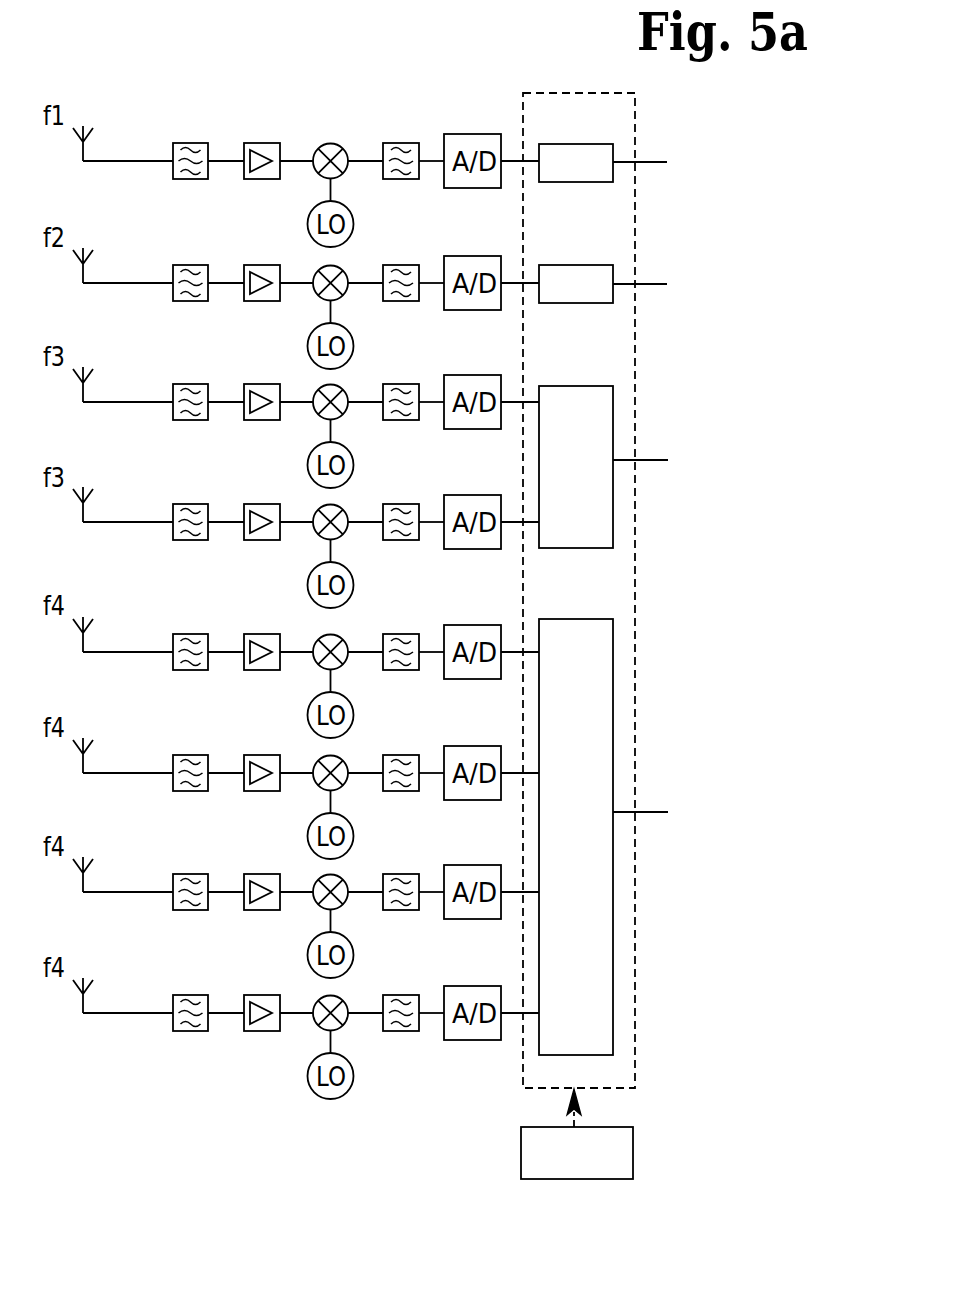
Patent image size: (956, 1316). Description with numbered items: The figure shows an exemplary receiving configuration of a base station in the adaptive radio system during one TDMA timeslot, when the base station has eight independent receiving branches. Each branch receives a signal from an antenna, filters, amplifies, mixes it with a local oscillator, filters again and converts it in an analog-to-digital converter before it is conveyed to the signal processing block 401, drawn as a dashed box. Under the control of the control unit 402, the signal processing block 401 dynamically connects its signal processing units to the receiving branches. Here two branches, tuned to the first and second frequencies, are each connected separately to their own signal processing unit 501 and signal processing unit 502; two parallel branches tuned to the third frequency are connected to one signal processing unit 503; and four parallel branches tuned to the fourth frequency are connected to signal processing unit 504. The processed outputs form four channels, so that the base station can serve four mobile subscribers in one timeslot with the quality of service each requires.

The signal processing block 401 is at (552, 93).
The control unit 402 is at (521, 1155).
The signal processing unit 501 is at (613, 154).
The signal processing unit 502 is at (613, 274).
The signal processing unit 503 is at (613, 418).
The signal processing unit 504 is at (613, 667).